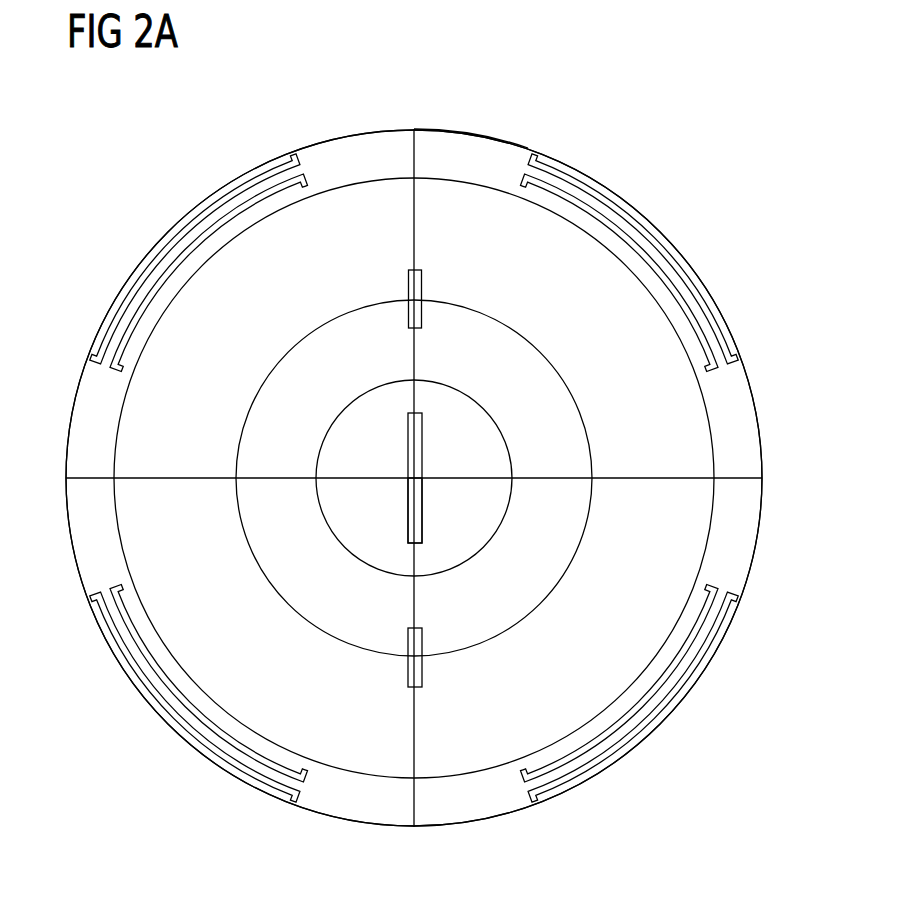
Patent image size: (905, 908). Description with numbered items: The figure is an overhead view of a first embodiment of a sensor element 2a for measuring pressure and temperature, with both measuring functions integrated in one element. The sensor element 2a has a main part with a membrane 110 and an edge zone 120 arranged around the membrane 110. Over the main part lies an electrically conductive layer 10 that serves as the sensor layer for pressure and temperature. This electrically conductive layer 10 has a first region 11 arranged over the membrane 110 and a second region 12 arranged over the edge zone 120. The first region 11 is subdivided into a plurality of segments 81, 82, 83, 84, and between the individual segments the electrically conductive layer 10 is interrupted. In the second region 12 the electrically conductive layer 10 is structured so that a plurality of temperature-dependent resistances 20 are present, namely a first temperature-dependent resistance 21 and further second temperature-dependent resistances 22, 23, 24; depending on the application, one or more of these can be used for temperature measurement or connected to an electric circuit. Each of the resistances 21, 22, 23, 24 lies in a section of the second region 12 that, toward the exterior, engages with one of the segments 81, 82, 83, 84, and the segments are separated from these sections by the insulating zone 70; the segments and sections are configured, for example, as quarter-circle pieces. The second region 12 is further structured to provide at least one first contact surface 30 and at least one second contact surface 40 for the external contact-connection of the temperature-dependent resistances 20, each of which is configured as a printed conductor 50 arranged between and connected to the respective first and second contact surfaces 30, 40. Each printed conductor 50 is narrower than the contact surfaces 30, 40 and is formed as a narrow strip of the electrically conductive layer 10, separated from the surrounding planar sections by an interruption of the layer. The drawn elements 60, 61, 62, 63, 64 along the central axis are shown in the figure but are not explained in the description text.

The sensor element 2a is at (644, 66).
The electrically conductive layer 10 is at (414, 513).
The first region 11 is at (373, 738).
The second region 12 is at (442, 815).
The temperature-dependent resistances 20 is at (406, 465).
The printed conductor 50 is at (406, 465).
The first temperature-dependent resistance 21 is at (250, 198).
The second temperature-dependent resistance 22 is at (127, 635).
The second temperature-dependent resistance 23 is at (683, 670).
The second temperature-dependent resistance 24 is at (585, 203).
The first contact surface 30 is at (738, 388).
The second contact surface 40 is at (460, 143).
The central sensing elements 60 is at (415, 484).
The first central sensing element 61 is at (407, 512).
The second central sensing element 62 is at (423, 450).
The third central sensing element 63 is at (407, 290).
The fourth central sensing element 64 is at (423, 667).
The insulating zone 70 is at (715, 527).
The segment 81 is at (357, 210).
The segment 82 is at (330, 712).
The segment 83 is at (510, 712).
The segment 84 is at (495, 212).
The membrane 110 is at (670, 437).
The edge zone 120 is at (760, 410).